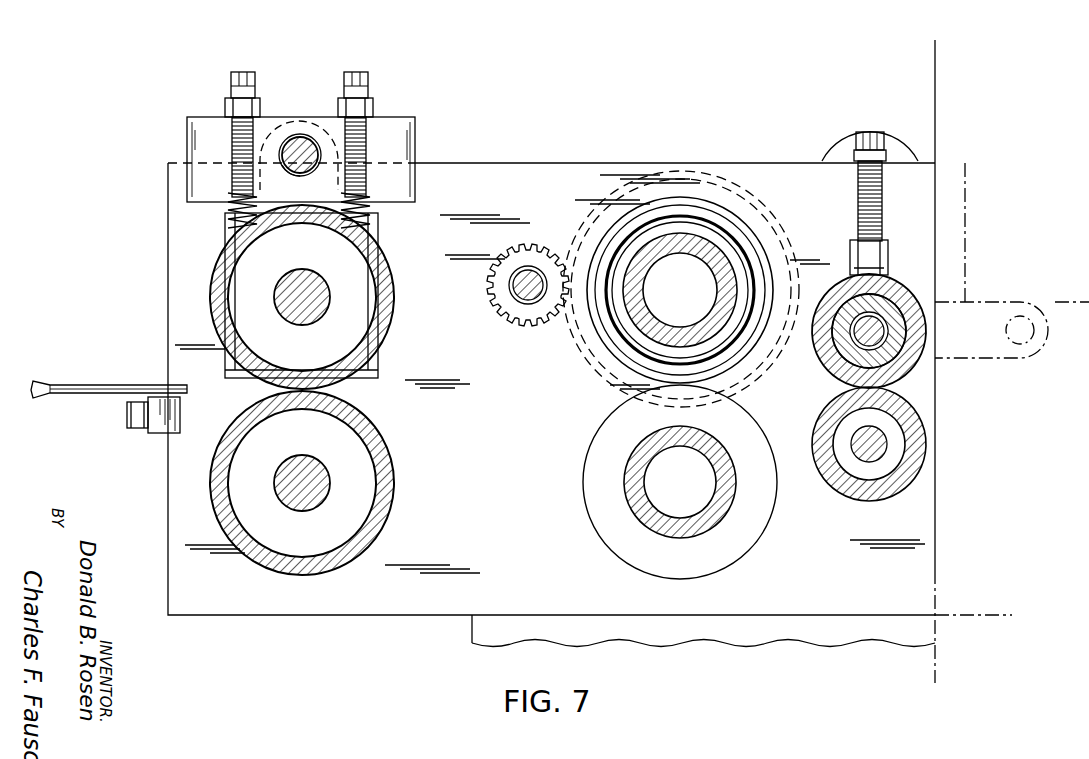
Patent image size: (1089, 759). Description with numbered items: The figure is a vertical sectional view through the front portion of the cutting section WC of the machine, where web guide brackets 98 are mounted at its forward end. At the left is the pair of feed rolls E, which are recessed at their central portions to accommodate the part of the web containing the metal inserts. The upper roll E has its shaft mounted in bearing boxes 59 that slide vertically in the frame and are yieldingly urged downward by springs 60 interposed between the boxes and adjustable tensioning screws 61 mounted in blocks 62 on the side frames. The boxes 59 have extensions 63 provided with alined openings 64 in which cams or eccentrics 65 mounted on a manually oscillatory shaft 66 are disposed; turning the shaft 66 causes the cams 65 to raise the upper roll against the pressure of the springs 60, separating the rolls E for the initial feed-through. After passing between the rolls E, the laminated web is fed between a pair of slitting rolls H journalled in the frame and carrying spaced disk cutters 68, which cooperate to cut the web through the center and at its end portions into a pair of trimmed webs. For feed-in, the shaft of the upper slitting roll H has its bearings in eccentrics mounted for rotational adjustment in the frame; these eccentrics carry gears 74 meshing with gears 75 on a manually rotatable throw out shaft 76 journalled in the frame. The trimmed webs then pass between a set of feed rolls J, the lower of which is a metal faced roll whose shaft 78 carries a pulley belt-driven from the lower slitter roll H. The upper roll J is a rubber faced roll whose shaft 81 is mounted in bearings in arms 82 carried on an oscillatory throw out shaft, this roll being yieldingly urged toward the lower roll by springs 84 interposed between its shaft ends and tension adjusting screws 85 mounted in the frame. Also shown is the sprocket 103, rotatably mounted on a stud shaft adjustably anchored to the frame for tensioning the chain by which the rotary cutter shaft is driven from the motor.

The cutting section WC is at (728, 170).
The blocks 62 is at (415, 130).
The extensions 63 is at (331, 121).
The manually oscillatory shaft 66 is at (303, 137).
The cams or eccentrics 65 is at (311, 171).
The alined openings 64 is at (288, 171).
The adjustable tensioning screws 61 is at (243, 72).
The springs 60 is at (233, 206).
The bearing boxes 59 is at (228, 230).
The feed rolls E is at (393, 297).
The web guide brackets 98 is at (100, 386).
The gears 74 is at (590, 228).
The gears 75 is at (512, 252).
The throw out shaft 76 is at (520, 285).
The disk cutters 68 is at (738, 376).
The slitting rolls H is at (628, 340).
The sprocket 103 is at (905, 152).
The tension adjusting screws 85 is at (868, 132).
The springs 84 is at (888, 270).
The feed rolls J is at (826, 408).
The shaft 81 is at (872, 331).
The shaft 78 is at (880, 444).
The arms 82 is at (982, 360).